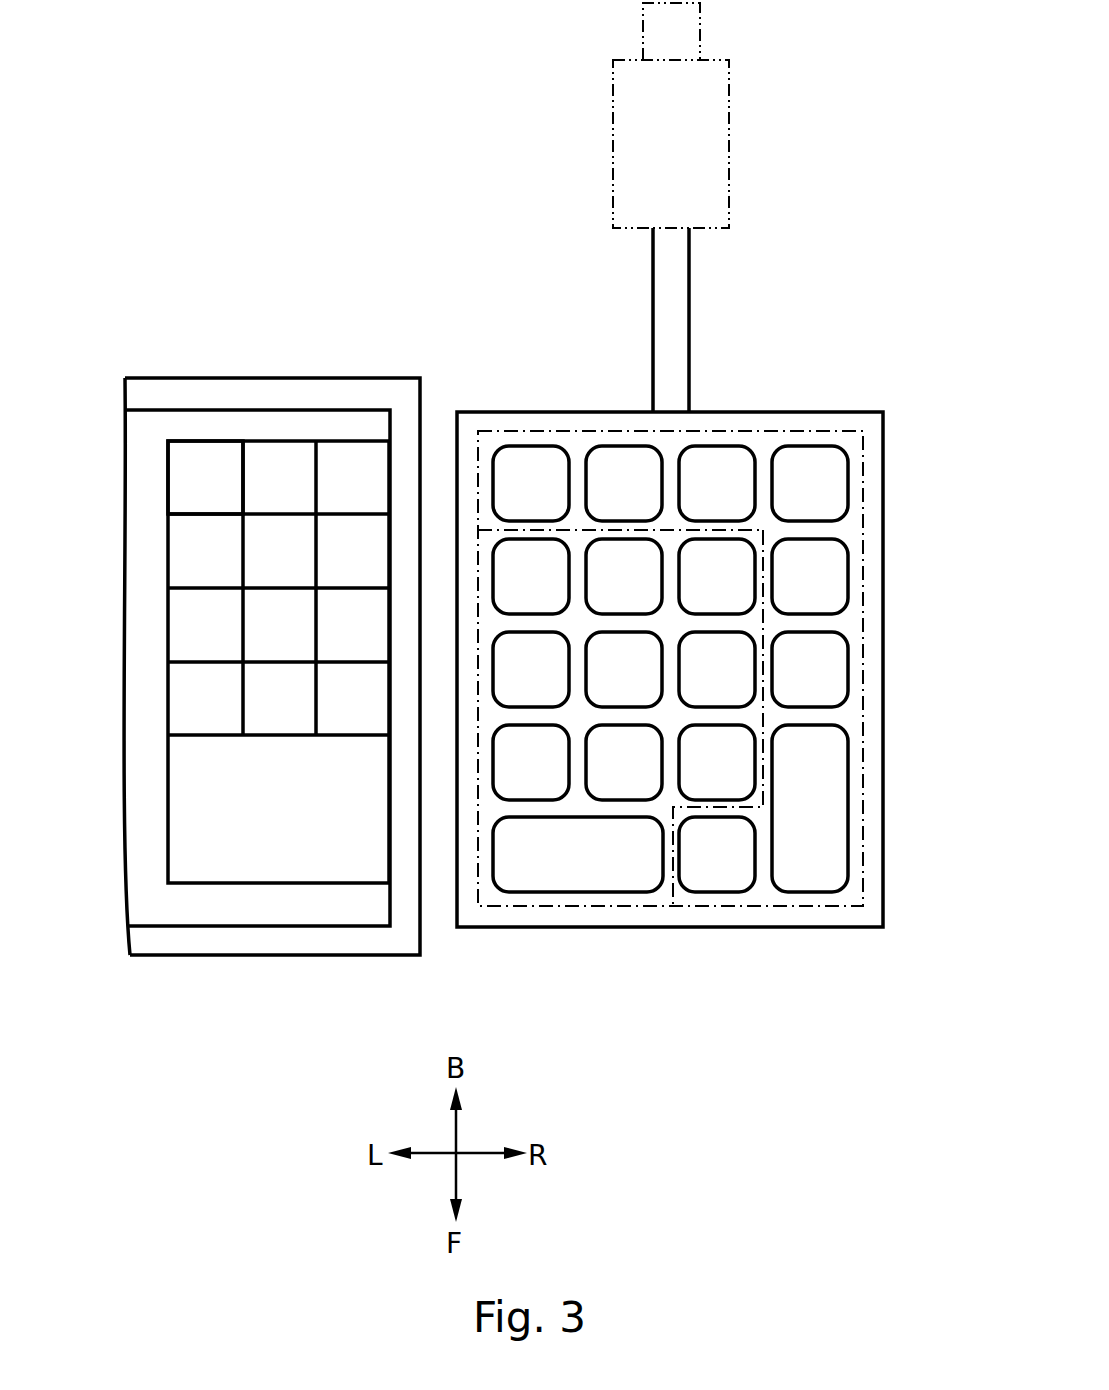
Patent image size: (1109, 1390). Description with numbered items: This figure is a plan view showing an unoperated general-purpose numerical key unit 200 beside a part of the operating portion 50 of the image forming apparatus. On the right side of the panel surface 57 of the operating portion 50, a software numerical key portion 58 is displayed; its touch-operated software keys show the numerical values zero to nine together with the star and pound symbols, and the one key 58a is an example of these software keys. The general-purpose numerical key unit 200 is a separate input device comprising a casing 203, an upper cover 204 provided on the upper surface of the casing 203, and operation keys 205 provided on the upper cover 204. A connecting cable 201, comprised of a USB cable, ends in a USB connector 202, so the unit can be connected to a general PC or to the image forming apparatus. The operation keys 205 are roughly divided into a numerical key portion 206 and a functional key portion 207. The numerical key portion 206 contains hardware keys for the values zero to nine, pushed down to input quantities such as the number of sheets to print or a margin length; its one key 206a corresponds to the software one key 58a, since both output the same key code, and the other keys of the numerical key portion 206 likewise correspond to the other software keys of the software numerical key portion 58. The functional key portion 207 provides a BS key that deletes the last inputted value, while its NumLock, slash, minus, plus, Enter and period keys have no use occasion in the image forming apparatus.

The operating portion 50 is at (315, 385).
The panel surface 57 is at (150, 908).
The software numerical key portion 58 is at (99, 510).
The "1" key 58a is at (187, 452).
The general-purpose numerical key unit 200 is at (877, 183).
The connecting cable 201 is at (689, 302).
The USB connector 202 is at (730, 133).
The casing 203 is at (883, 562).
The upper cover 204 is at (863, 665).
The operation keys 205 is at (898, 440).
The numerical key portion 206 is at (622, 907).
The "1" key 206a is at (510, 778).
The functional key portion 207 is at (810, 907).